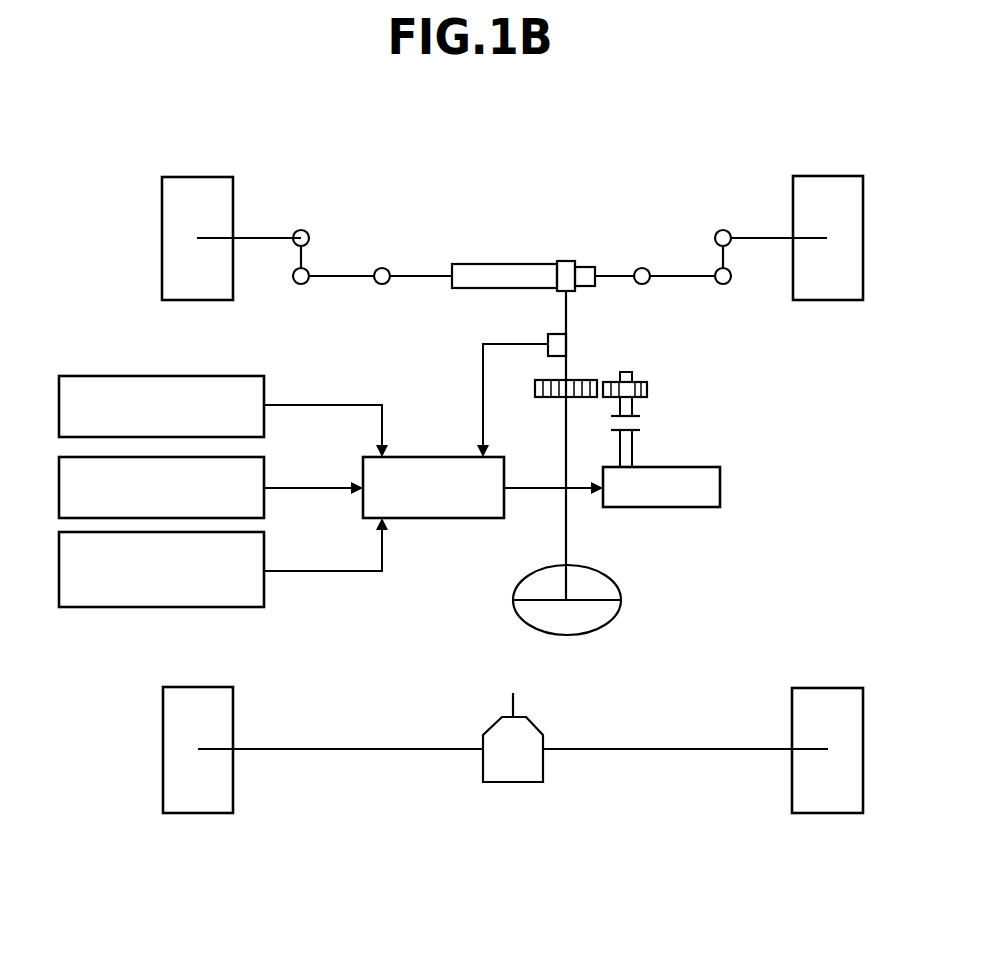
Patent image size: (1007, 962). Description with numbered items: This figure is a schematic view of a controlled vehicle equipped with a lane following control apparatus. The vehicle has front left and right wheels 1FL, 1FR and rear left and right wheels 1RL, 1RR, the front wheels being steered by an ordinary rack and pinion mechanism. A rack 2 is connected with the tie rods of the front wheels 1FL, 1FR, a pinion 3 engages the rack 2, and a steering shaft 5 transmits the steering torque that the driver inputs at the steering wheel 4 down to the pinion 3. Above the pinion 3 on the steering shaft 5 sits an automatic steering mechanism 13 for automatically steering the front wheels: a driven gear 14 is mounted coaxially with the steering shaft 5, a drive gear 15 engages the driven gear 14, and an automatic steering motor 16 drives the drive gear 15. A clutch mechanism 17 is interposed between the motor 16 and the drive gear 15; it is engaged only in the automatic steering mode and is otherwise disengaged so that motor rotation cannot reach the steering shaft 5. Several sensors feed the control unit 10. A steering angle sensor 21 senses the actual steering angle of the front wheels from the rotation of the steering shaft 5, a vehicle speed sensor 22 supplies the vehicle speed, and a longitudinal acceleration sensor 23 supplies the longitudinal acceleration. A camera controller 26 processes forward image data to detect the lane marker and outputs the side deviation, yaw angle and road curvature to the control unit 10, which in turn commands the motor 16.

The front left wheel 1FL is at (198, 177).
The front right wheel 1FR is at (828, 176).
The rear left wheel 1RL is at (198, 687).
The rear right wheel 1RR is at (820, 688).
The rack 2 is at (497, 264).
The pinion 3 is at (565, 261).
The steering wheel 4 is at (618, 585).
The steering shaft 5 is at (568, 543).
The control unit 10 is at (443, 519).
The automatic steering mechanism 13 is at (727, 389).
The driven gear 14 is at (545, 398).
The drive gear 15 is at (639, 383).
The automatic steering motor 16 is at (721, 487).
The clutch mechanism 17 is at (641, 416).
The steering angle sensor 21 is at (548, 340).
The vehicle speed sensor 22 is at (266, 417).
The longitudinal acceleration sensor 23 is at (266, 587).
The camera controller 26 is at (266, 498).